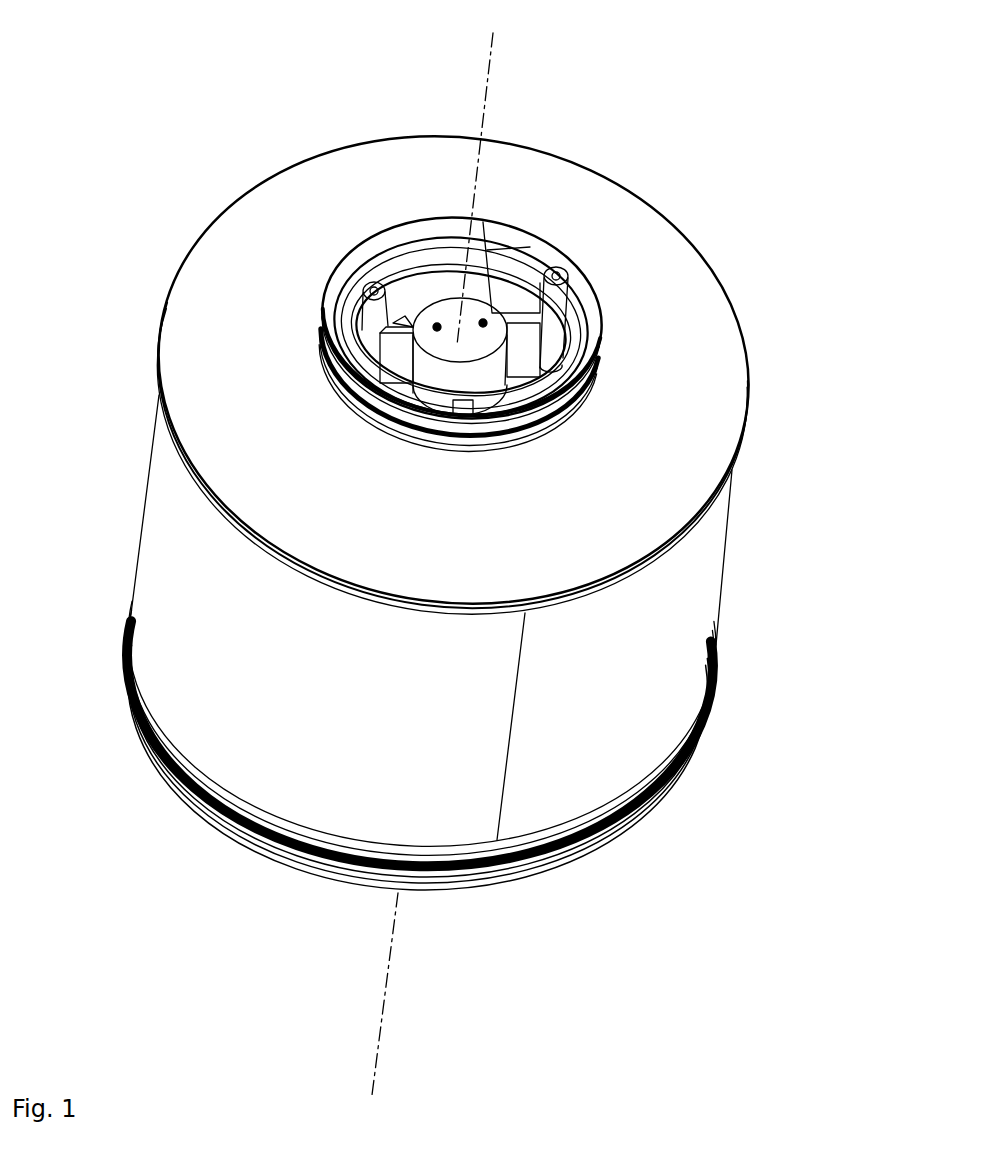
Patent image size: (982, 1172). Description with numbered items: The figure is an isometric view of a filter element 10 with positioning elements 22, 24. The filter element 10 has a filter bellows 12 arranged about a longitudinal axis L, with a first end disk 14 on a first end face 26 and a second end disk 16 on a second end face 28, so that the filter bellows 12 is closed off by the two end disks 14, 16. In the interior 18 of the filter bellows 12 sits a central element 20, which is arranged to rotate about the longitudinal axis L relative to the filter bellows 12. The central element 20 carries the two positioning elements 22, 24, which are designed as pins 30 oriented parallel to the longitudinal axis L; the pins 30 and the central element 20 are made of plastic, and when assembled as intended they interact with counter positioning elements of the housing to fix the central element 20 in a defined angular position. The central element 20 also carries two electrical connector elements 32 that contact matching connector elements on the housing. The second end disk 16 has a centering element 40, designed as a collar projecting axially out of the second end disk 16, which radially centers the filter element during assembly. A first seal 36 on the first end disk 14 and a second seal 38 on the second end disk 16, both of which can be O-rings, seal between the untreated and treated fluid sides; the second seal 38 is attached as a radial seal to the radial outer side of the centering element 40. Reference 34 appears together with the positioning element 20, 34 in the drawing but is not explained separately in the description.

The filter element 10 is at (203, 92).
The longitudinal axis L is at (445, 562).
The filter bellows 12 is at (163, 548).
The first end disk 14 is at (150, 739).
The second end disk 16 is at (190, 314).
The interior 18 is at (473, 256).
The central element 20 is at (506, 302).
The positioning element 22 is at (378, 288).
The positioning element 24 is at (567, 280).
The first end face 26 is at (206, 813).
The second end face 28 is at (232, 247).
The pins 30 is at (475, 280).
The electrical connector elements 32 is at (437, 325).
The boss 34 is at (511, 267).
The first seal 36 is at (317, 852).
The second seal 38 is at (323, 381).
The centering element 40 is at (334, 328).